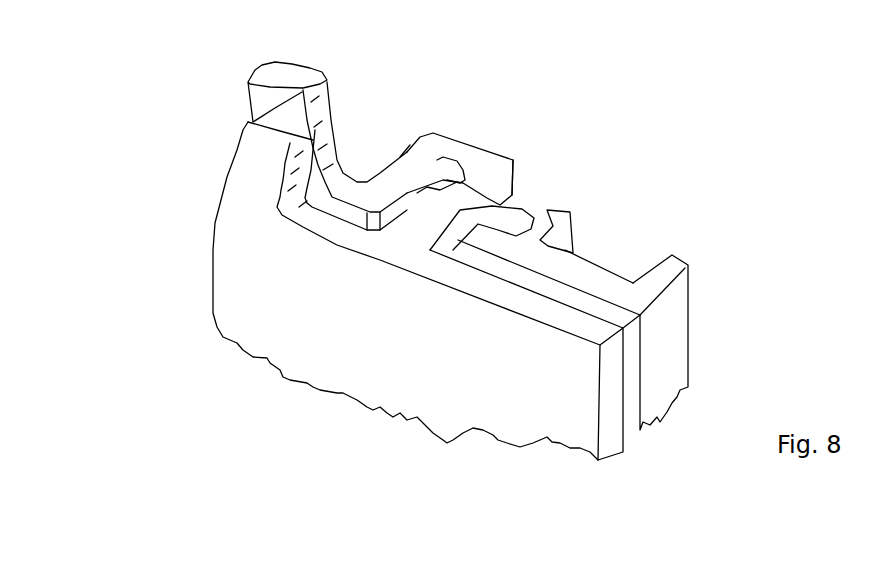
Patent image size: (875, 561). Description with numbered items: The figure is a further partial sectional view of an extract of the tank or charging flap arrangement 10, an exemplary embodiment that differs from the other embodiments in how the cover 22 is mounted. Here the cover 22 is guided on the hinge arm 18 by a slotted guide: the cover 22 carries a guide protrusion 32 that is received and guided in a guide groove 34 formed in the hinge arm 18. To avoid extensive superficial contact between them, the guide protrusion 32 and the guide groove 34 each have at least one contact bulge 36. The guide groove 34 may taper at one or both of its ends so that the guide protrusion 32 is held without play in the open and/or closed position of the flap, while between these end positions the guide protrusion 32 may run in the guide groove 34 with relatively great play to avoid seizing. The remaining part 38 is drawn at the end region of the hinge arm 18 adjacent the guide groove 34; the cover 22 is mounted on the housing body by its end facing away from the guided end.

The tank or charging flap arrangement 10 is at (677, 123).
The hinge arm 18 is at (350, 183).
The cover 22 is at (230, 277).
The guide protrusion 32 is at (513, 200).
The guide groove 34 is at (449, 158).
The contact bulge 36 is at (427, 183).
The plate end 38 is at (478, 185).